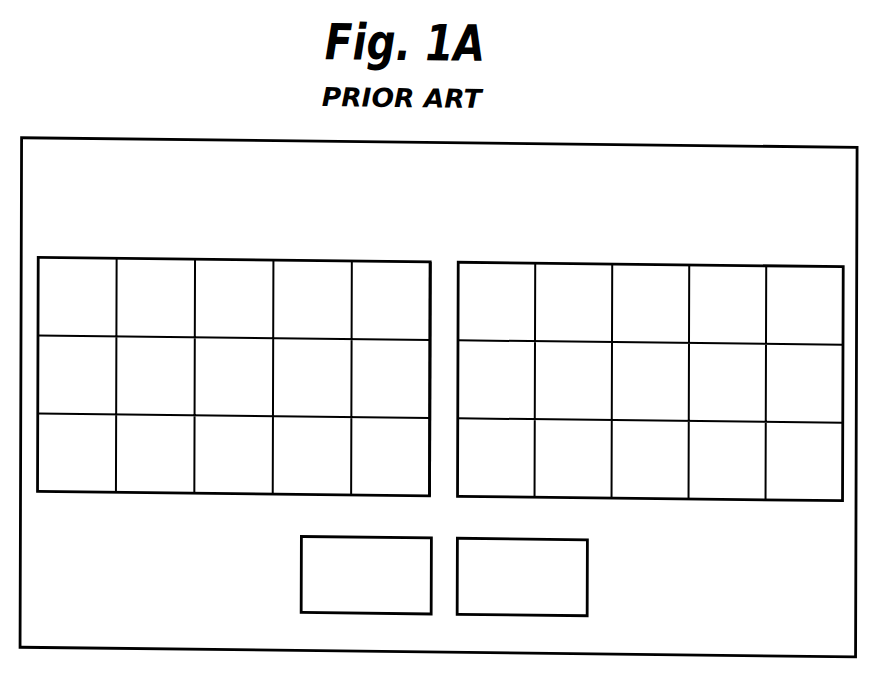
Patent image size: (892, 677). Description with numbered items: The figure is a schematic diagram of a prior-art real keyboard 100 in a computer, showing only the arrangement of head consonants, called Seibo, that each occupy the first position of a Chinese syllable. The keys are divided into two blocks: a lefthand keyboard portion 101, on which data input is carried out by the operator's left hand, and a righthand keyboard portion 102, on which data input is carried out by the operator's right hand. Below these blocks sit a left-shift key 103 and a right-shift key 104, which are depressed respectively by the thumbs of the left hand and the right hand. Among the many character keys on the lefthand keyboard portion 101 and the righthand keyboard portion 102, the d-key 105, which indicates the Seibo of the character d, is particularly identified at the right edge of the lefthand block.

The real keyboard 100 is at (72, 138).
The lefthand keyboard portion 101 is at (88, 257).
The righthand keyboard portion 102 is at (519, 257).
The left-shift key 103 is at (302, 555).
The right-shift key 104 is at (589, 552).
The d-key 105 is at (433, 334).